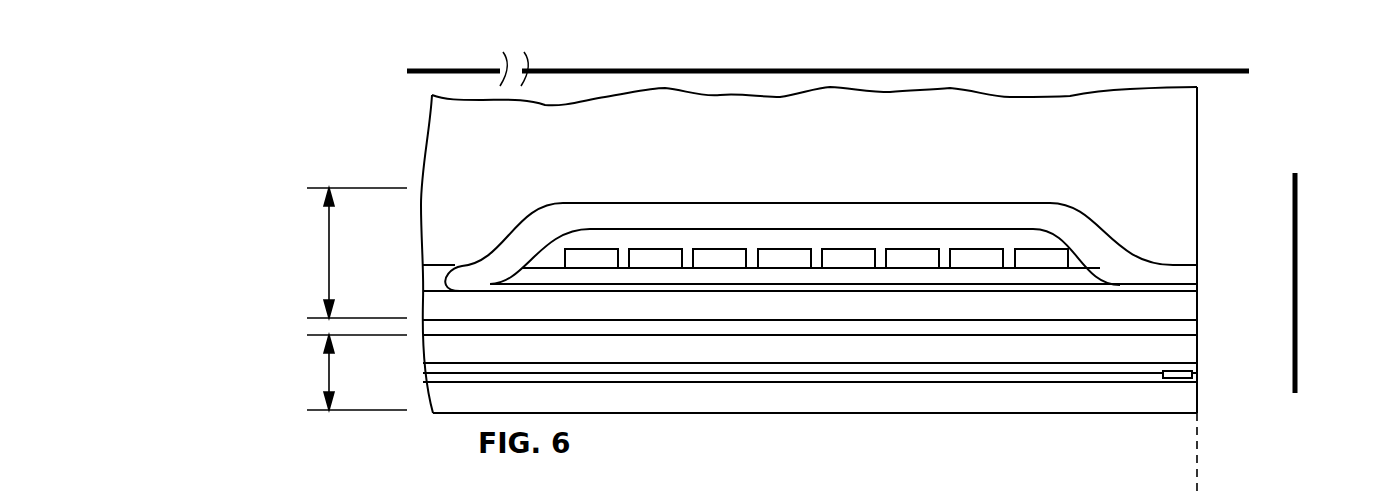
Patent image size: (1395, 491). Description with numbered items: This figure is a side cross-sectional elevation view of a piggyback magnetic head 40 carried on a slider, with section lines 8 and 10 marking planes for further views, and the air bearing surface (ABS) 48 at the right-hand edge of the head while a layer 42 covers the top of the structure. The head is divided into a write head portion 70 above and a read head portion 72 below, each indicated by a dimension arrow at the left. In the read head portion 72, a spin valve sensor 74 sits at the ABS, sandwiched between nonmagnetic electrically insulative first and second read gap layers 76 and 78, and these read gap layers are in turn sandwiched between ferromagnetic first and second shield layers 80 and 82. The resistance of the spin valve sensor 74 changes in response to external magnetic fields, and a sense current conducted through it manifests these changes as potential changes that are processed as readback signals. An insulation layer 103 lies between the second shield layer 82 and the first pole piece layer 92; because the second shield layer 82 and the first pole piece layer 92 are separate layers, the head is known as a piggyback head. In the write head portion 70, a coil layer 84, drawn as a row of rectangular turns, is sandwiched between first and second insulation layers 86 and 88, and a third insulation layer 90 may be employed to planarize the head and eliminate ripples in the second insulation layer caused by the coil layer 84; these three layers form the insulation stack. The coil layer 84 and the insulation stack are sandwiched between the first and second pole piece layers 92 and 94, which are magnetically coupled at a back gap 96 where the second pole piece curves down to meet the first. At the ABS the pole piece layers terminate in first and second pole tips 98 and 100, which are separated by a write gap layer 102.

The section plane 8- 8 is at (1320, 187).
The section plane 10- 10 is at (415, 22).
The piggyback magnetic head 40 is at (400, 96).
The overcoat layer 42 is at (1180, 118).
The air bearing surface (ABS) 48 is at (1244, 452).
The write head portion 70 is at (329, 253).
The read head portion 72 is at (329, 370).
The spin valve sensor 74 is at (1193, 374).
The first read gap layer 76 is at (812, 383).
The second read gap layer 78 is at (757, 362).
The first shield layer 80 is at (925, 403).
The second shield layer 82 is at (1035, 350).
The coil layer 84 is at (787, 260).
The first insulation layer 86 is at (667, 277).
The second insulation layer 88 is at (1080, 262).
The third insulation layer 90 is at (590, 233).
The first pole piece layer 92 is at (1102, 308).
The second pole piece layer 94 is at (958, 205).
The back gap 96 is at (446, 283).
The first pole tip 98 is at (1197, 305).
The second pole tip 100 is at (1190, 275).
The write gap layer 102 is at (1197, 286).
The insulation layer 103 is at (980, 327).